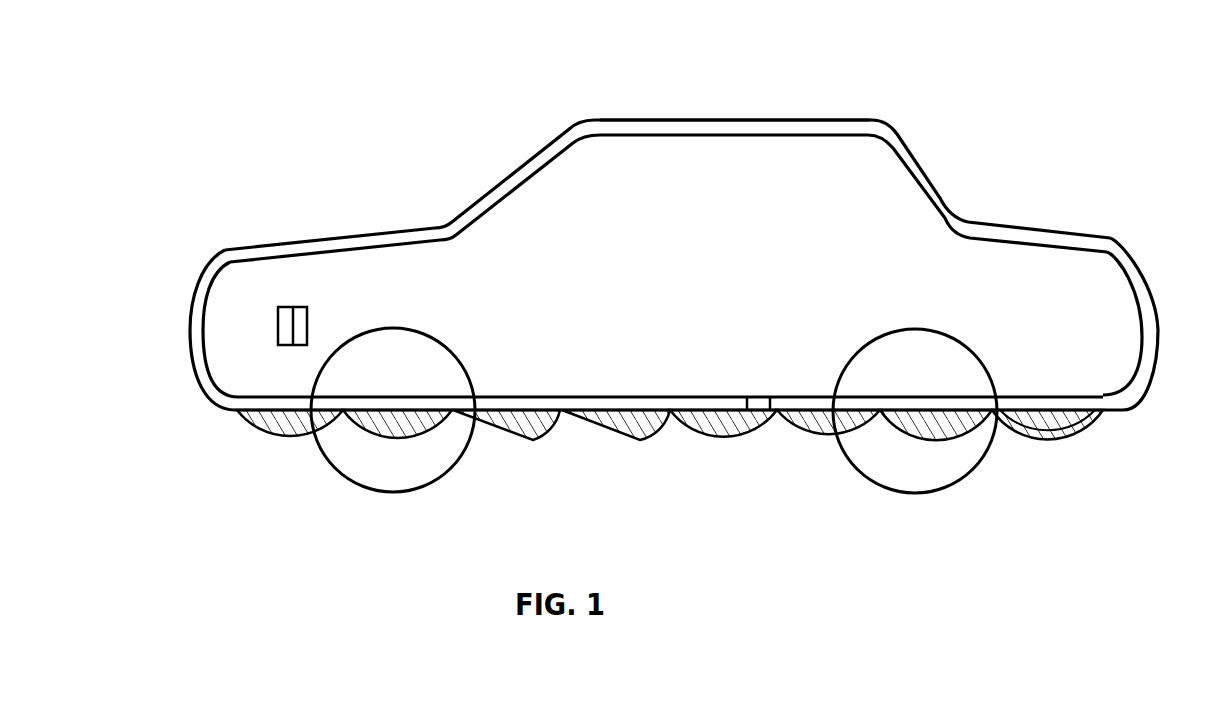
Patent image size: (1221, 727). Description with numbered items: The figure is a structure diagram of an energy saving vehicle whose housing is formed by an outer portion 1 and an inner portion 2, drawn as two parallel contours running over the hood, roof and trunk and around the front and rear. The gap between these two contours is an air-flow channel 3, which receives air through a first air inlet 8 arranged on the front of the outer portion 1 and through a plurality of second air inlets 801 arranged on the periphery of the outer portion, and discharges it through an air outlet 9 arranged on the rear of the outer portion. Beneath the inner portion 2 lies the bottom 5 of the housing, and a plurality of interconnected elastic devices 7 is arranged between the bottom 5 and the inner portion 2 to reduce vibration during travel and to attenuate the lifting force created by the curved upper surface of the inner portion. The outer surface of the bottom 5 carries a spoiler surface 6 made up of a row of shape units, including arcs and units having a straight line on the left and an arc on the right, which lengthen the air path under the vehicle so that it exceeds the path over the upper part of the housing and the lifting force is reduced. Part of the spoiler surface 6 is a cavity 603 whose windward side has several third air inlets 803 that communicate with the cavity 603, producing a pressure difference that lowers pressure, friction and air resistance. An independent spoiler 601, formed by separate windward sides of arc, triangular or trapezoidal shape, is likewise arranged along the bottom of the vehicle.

The outer portion of housing 1 is at (573, 122).
The inner portion of housing 2 is at (625, 135).
The air-flow channel 3 is at (667, 132).
The bottom of housing 5 is at (688, 410).
The spoiler surface 6 is at (713, 425).
The elastic device 7 is at (762, 397).
The first air inlet 8 is at (186, 330).
The second air inlet 801 is at (228, 279).
The third air inlet 803 is at (950, 427).
The spoiler 601 is at (875, 422).
The cavity 603 is at (1053, 423).
The air outlet 9 is at (1157, 320).